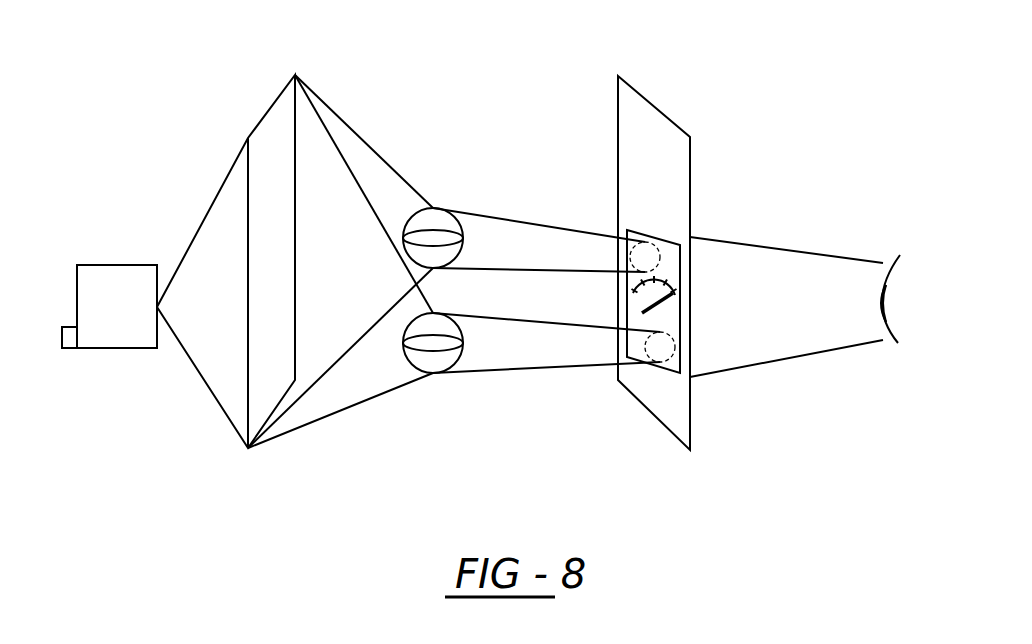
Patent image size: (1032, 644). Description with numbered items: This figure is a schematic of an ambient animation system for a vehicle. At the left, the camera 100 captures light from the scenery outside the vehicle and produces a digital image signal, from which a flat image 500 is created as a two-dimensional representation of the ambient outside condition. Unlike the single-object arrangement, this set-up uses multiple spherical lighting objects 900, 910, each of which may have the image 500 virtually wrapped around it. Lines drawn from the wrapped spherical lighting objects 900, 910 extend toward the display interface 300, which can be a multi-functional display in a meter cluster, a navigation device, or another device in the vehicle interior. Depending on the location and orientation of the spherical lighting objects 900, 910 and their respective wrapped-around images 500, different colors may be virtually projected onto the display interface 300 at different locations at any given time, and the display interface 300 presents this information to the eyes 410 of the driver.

The camera 100 is at (105, 265).
The flat image 500 is at (275, 100).
The spherical lighting object 900 is at (462, 240).
The spherical lighting object 910 is at (460, 357).
The display interface 300 is at (667, 115).
The eyes 410 is at (882, 297).